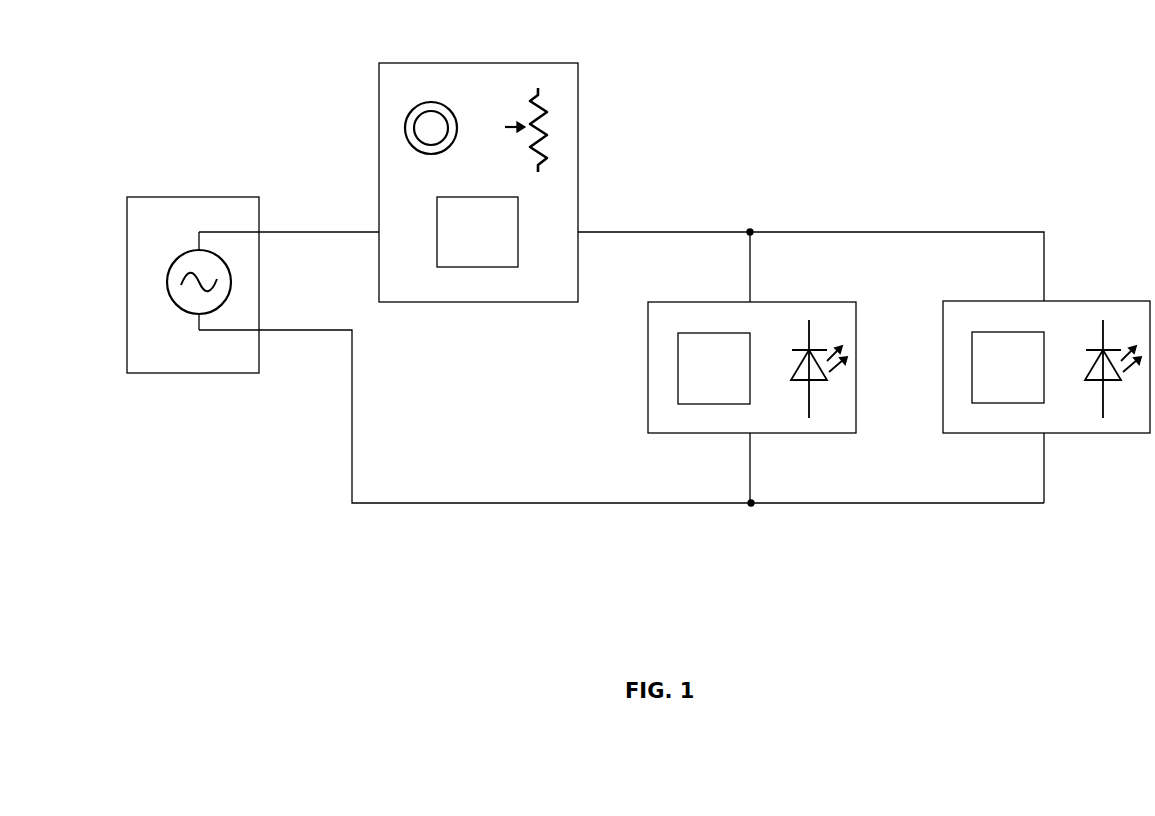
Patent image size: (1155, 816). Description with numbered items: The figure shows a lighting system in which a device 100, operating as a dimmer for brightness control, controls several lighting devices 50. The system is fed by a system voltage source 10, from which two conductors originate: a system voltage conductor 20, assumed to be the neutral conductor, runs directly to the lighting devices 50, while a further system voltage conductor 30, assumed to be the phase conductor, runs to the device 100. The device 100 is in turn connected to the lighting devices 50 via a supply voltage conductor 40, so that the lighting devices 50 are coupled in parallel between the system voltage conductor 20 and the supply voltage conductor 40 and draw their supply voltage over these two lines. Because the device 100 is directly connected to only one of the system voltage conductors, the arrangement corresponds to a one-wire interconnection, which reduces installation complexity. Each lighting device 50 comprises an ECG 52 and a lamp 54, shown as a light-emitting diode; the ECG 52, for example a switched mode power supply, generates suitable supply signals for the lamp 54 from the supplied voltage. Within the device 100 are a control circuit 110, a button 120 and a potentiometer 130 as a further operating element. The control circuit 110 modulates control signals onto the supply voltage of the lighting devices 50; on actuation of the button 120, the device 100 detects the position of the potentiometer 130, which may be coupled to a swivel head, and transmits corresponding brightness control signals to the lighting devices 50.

The system voltage source 10 is at (156, 197).
The system voltage conductor 20 is at (295, 331).
The system voltage conductor 30 is at (312, 232).
The supply voltage conductor 40 is at (677, 231).
The lighting device 50 is at (668, 434).
The ECG 52 is at (861, 368).
The lamp 54 is at (808, 397).
The device 100 is at (552, 63).
The control circuit 110 is at (477, 232).
The button 120 is at (451, 109).
The potentiometer 130 is at (526, 142).